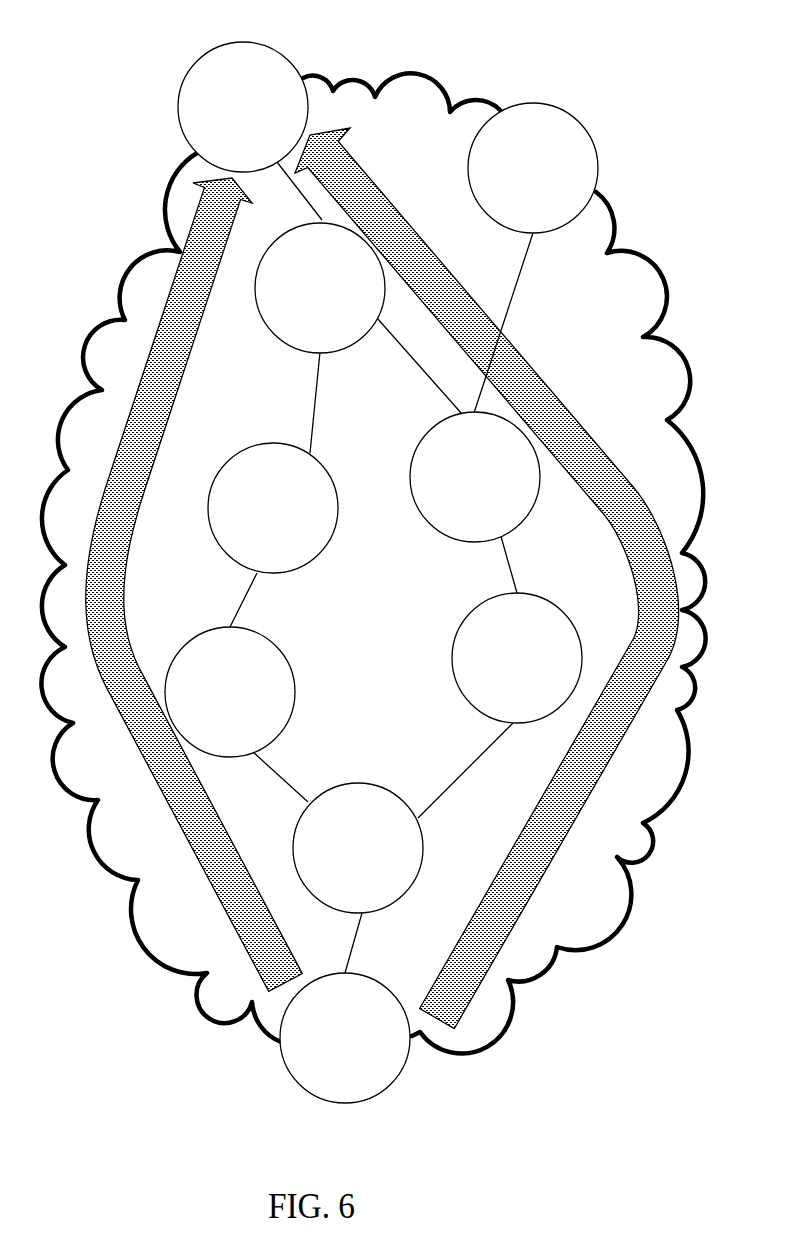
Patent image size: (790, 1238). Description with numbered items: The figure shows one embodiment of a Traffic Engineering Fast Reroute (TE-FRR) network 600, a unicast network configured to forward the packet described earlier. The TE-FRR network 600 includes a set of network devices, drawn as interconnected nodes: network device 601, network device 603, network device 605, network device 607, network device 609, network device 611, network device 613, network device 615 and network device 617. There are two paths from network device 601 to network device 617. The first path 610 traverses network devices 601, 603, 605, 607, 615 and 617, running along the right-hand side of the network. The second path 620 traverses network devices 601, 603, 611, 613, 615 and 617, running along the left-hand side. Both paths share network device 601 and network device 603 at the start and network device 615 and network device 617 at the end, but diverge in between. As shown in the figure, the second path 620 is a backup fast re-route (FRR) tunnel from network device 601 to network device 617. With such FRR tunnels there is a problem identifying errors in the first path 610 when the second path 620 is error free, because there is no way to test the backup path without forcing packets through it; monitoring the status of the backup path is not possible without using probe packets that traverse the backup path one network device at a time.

The Traffic Engineering Fast Reroute (TE-FRR) network 600 is at (358, 78).
The network device 601 is at (345, 1038).
The network device 603 is at (358, 848).
The network device 605 is at (517, 658).
The network device 607 is at (475, 477).
The network device 609 is at (533, 168).
The network device 611 is at (230, 692).
The network device 613 is at (273, 508).
The network device 615 is at (320, 288).
The network device 617 is at (243, 107).
The first path 610 is at (515, 357).
The second path 620 is at (183, 371).